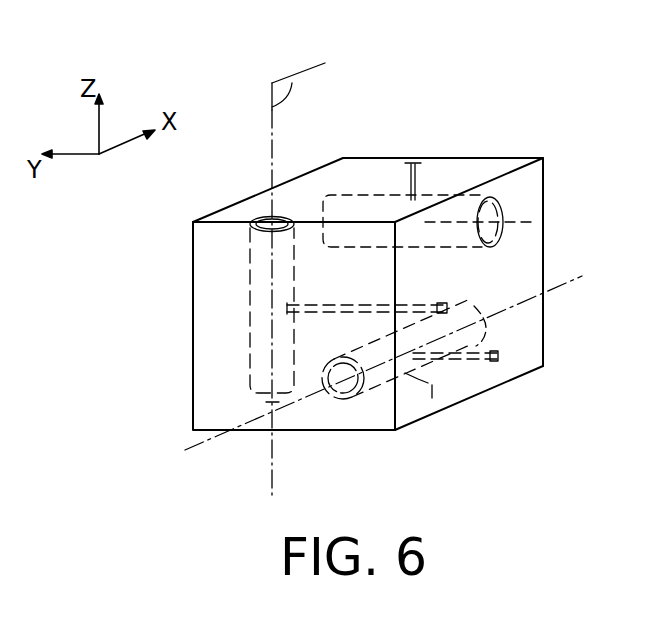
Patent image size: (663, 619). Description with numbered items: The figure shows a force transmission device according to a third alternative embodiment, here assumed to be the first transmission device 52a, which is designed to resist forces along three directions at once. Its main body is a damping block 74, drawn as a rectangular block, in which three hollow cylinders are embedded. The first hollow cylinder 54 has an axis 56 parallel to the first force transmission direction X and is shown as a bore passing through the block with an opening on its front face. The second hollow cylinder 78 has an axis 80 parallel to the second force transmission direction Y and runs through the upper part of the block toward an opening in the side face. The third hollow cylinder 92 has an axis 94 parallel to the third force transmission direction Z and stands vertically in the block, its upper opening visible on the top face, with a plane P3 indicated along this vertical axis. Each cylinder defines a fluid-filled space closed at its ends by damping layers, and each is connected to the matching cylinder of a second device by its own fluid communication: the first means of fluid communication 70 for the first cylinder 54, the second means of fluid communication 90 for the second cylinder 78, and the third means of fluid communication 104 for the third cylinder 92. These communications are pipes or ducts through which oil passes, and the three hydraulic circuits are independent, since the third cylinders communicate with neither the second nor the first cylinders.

The plane P3 is at (282, 86).
The first transmission device 52a is at (502, 83).
The first hollow cylinder 54 is at (433, 413).
The axis 56 is at (497, 313).
The first means of fluid communication 70 is at (494, 362).
The damping block 74 is at (498, 161).
The second hollow cylinder 78 is at (432, 200).
The axis 80 is at (505, 222).
The second means of fluid communication 90 is at (405, 166).
The third hollow cylinder 92 is at (248, 287).
The axis 94 is at (272, 181).
The third means of fluid communication 104 is at (447, 304).